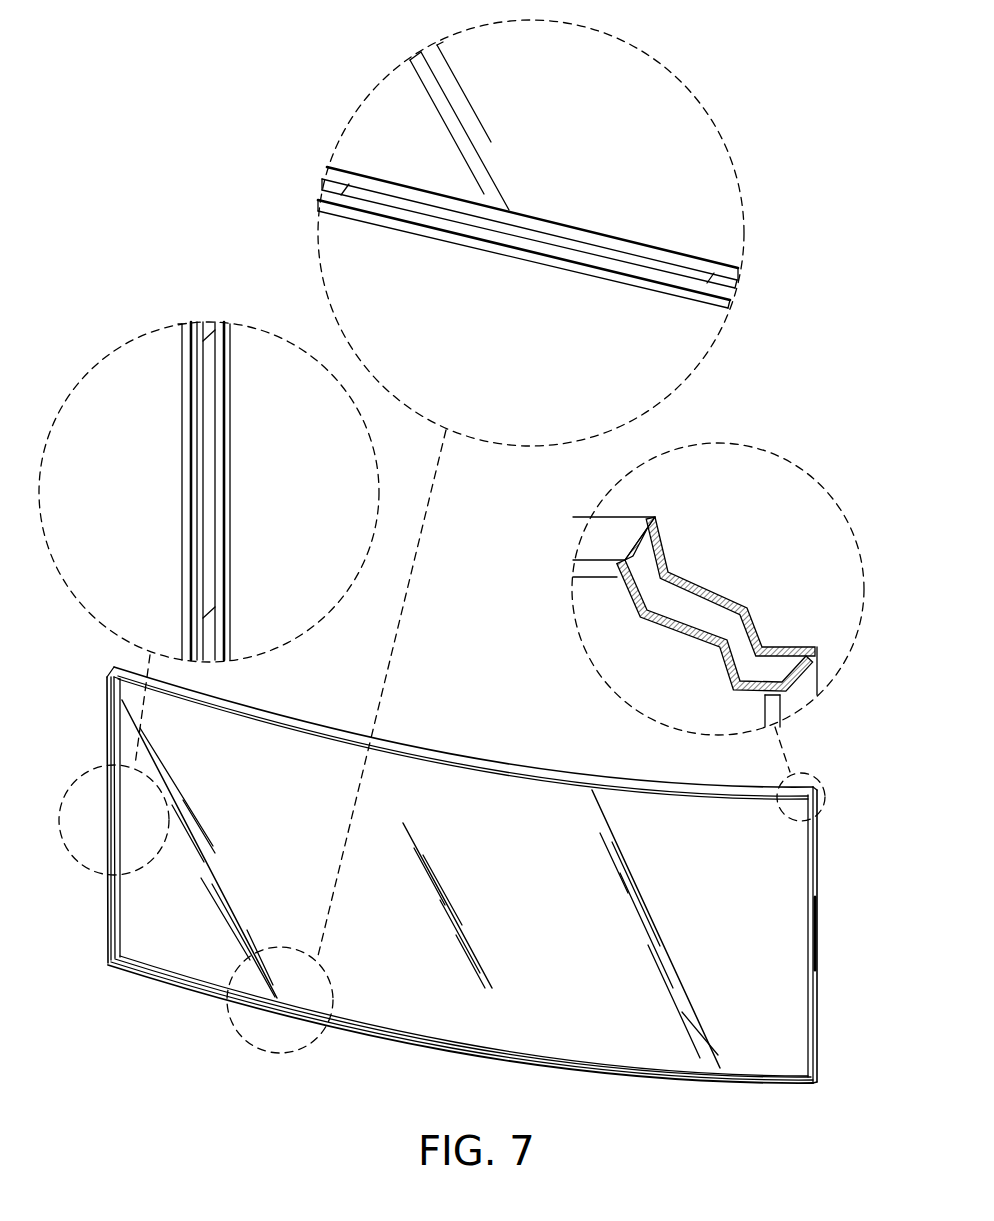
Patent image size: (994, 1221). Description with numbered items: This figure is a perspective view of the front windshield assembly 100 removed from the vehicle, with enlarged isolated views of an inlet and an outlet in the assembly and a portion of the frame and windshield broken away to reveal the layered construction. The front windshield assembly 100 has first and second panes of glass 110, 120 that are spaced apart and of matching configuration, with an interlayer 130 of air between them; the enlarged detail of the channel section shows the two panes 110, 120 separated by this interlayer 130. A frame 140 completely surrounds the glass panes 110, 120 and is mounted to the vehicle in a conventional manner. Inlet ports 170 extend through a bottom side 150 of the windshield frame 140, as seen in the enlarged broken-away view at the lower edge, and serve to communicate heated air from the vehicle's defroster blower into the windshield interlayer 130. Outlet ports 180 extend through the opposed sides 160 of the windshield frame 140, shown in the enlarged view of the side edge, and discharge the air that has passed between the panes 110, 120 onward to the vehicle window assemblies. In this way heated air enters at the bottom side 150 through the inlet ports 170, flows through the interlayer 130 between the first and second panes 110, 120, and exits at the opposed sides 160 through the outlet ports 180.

The front windshield assembly 100 is at (463, 690).
The first pane of glass 110 is at (683, 632).
The second pane of glass 120 is at (707, 587).
The interlayer 130 is at (738, 647).
The frame 140 is at (567, 766).
The bottom side 150 is at (667, 1078).
The opposed sides 160 is at (185, 508).
The inlet ports 170 is at (408, 202).
The outlet ports 180 is at (210, 540).